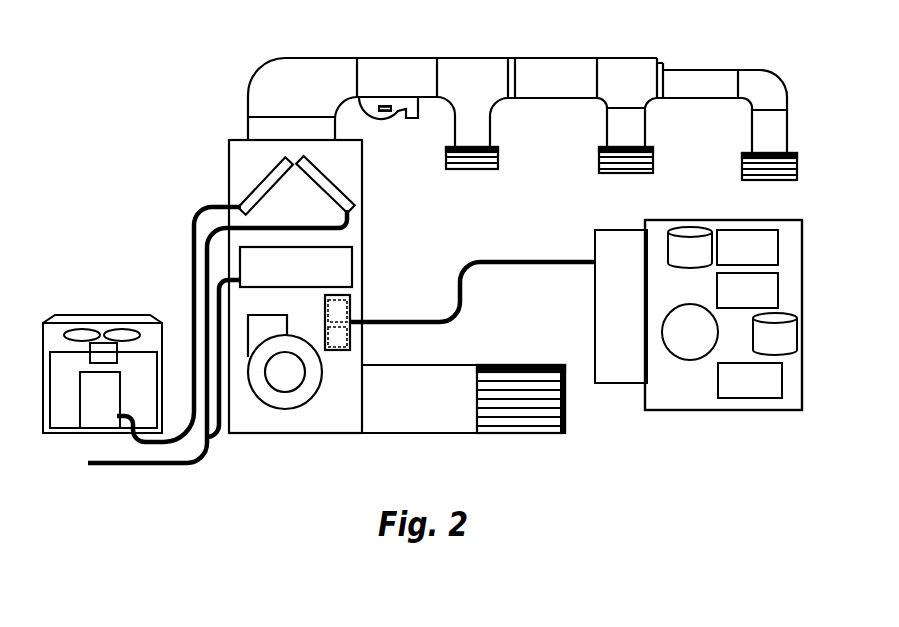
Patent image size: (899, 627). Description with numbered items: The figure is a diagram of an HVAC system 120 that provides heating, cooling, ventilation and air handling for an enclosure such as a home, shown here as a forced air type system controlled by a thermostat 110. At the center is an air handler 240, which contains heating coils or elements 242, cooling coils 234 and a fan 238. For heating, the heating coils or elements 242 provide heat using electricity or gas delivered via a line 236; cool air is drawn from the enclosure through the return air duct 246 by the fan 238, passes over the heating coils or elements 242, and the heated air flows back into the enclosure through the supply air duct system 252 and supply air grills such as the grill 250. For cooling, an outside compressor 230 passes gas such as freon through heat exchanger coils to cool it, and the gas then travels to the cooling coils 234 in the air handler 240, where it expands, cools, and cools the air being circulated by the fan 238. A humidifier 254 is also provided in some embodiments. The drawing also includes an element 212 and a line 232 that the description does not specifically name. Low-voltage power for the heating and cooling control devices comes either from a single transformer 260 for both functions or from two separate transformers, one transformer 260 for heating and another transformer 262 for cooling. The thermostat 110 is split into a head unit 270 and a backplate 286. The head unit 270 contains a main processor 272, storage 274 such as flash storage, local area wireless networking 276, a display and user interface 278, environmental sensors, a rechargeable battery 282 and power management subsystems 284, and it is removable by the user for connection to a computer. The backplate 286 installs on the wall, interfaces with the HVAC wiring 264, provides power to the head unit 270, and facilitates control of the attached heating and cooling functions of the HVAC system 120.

The thermostat 110 is at (700, 443).
The HVAC system 120 is at (305, 544).
The controller 212 is at (352, 303).
The outside compressor 230 is at (103, 313).
The refrigerant line 232 is at (192, 235).
The cooling coils 234 is at (260, 183).
The line 236 is at (195, 466).
The fan 238 is at (292, 405).
The air handler 240 is at (230, 140).
The heating coils or elements 242 is at (277, 276).
The return air duct 246 is at (565, 403).
The supply air grill 250 is at (498, 157).
The supply air duct system 252 is at (550, 60).
The humidifier 254 is at (400, 116).
The transformer 260 is at (326, 308).
The transformer 262 is at (340, 338).
The HVAC wiring 264 is at (553, 262).
The head unit 270 is at (672, 398).
The main processor 272 is at (766, 258).
The storage 274 is at (672, 259).
The local area wireless networking 276 is at (766, 301).
The display and user interface 278 is at (672, 342).
The rechargeable battery 282 is at (757, 345).
The power management subsystems 284 is at (732, 391).
The backplate 286 is at (602, 368).